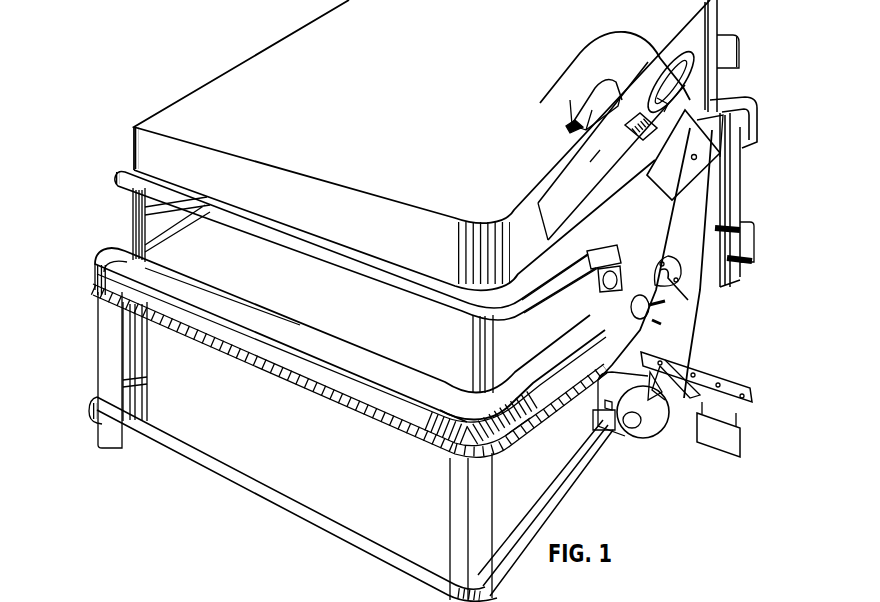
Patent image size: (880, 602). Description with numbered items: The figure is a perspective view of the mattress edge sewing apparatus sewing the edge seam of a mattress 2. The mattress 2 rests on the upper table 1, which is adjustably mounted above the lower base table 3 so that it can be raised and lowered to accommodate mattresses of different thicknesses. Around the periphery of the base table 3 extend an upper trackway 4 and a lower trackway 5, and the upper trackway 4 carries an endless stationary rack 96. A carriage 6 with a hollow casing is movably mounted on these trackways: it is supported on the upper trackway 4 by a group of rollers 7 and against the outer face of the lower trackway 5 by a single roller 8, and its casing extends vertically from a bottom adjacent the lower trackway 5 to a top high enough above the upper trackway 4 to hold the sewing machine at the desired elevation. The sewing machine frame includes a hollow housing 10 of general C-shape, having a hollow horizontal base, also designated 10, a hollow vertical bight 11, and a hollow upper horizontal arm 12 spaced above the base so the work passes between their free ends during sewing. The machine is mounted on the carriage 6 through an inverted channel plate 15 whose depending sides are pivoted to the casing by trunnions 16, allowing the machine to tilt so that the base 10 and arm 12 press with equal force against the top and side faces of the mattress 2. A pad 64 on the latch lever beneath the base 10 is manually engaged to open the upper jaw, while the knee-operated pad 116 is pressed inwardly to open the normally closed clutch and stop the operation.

The upper table 1 is at (128, 167).
The mattress 2 is at (405, 83).
The lower base table 3 is at (113, 318).
The upper trackway 4 is at (262, 326).
The lower trackway 5 is at (208, 460).
The carriage 6 is at (703, 315).
The rollers 7 is at (600, 287).
The roller 8 is at (610, 430).
The hollow housing 10 is at (614, 160).
The hollow vertical bight 11 is at (595, 114).
The hollow upper horizontal arm 12 is at (545, 100).
The channel plate 15 is at (681, 180).
The trunnions 16 is at (693, 154).
The pad 64 is at (660, 108).
The endless stationary rack 96 is at (525, 424).
The pad 116 is at (722, 446).